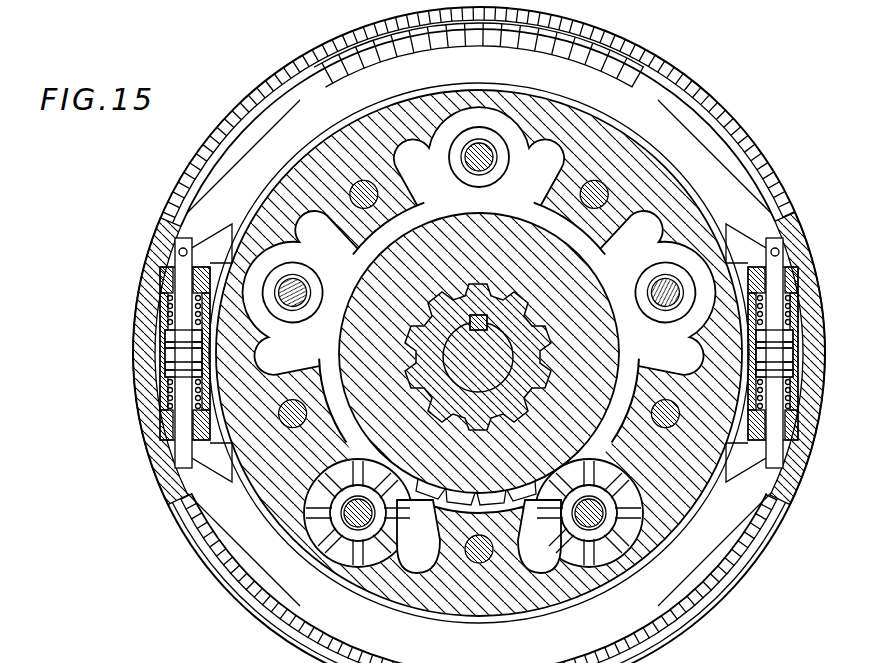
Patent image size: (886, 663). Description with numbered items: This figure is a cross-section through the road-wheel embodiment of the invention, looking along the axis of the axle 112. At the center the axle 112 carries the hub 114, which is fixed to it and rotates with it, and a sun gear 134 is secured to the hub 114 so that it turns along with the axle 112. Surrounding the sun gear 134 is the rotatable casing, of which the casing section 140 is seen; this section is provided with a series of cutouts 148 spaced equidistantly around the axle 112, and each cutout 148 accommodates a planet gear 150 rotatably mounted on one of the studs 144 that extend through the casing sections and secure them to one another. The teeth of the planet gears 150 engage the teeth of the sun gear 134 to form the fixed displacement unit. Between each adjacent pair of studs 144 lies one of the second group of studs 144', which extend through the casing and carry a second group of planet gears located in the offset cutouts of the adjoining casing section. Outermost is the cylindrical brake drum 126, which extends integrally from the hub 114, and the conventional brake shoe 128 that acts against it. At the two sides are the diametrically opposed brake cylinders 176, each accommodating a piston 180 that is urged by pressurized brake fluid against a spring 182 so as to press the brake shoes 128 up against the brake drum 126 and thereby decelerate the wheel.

The axle 112 is at (497, 362).
The hub 114 is at (412, 330).
The brake drum 126 is at (333, 44).
The brake shoe 128 is at (278, 82).
The sun gear 134 is at (563, 285).
The casing section 140 is at (610, 140).
The studs 144 is at (479, 359).
The second group of studs 144' is at (479, 384).
The cutouts 148 is at (555, 135).
The planet gears 150 is at (481, 133).
The brake cylinders 176 is at (165, 358).
The pistons 180 is at (178, 258).
The springs 182 is at (167, 306).